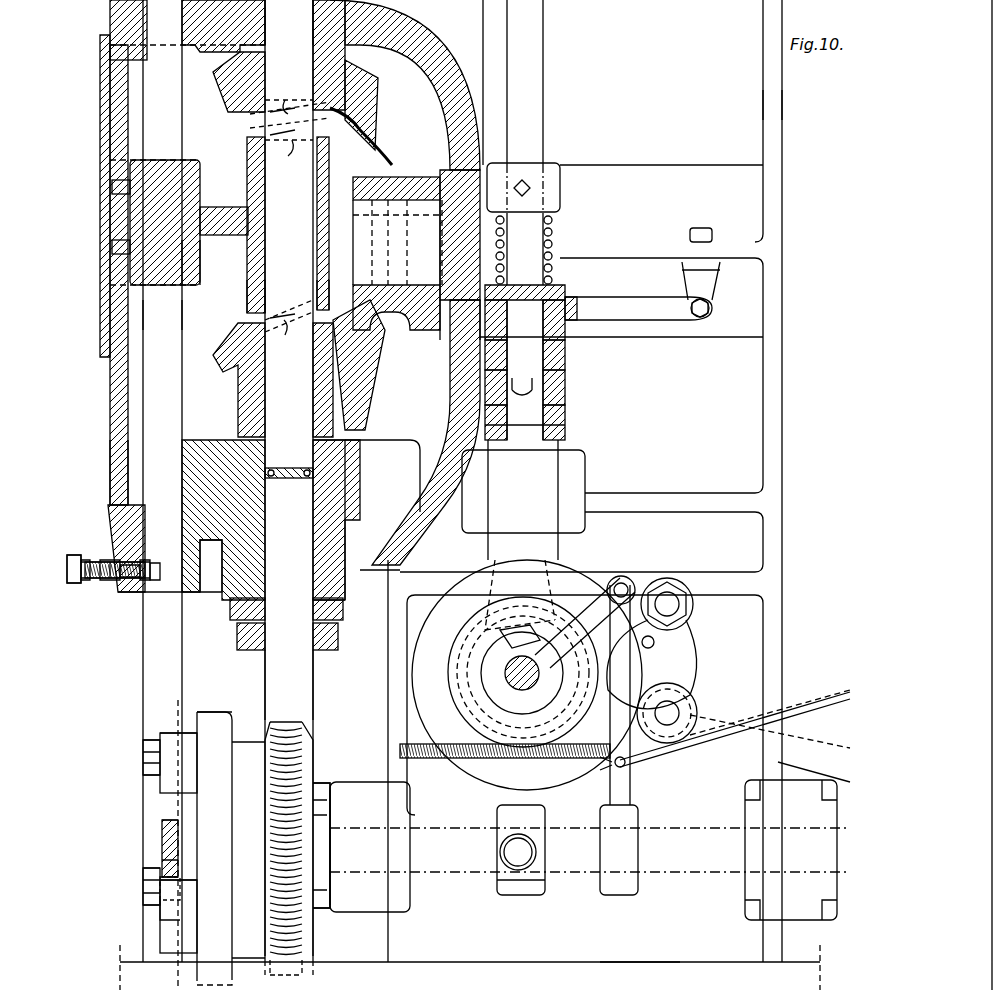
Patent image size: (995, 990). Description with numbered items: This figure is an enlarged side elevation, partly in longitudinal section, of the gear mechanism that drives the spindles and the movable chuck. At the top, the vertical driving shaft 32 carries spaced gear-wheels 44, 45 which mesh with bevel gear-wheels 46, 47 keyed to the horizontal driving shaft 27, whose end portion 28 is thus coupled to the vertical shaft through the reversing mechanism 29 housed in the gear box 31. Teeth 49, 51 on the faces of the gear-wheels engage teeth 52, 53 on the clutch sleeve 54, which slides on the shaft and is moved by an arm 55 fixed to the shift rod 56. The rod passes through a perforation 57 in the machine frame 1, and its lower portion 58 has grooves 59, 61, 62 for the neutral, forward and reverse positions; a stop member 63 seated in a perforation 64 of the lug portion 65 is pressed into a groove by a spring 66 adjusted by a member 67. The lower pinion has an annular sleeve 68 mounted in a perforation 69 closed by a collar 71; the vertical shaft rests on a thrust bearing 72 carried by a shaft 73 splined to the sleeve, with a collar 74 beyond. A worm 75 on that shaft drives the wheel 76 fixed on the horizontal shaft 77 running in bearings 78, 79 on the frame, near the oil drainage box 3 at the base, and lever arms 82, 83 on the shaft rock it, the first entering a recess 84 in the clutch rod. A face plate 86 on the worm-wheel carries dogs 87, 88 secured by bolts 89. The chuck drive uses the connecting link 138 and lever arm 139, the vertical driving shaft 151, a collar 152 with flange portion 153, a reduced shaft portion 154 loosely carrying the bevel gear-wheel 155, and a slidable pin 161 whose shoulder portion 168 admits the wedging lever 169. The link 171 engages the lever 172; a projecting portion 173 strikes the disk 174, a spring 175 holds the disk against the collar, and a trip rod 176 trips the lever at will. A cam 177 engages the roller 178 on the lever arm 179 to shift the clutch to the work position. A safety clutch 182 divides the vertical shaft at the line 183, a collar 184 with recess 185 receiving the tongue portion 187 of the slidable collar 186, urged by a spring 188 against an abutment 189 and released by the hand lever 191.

The machine frame 1 is at (755, 105).
The oil drainage box 3 is at (640, 952).
The horizontally extending driving shaft 27 is at (446, 326).
The remaining end portion 28 is at (396, 242).
The reversing mechanism 29 is at (204, 262).
The gear box 31 is at (455, 42).
The vertical driving shaft 32 is at (289, 22).
The gear-wheel 44 is at (222, 368).
The gear-wheel 45 is at (218, 80).
The bevel gear-wheel 46 is at (395, 364).
The bevel gear-wheel 47 is at (370, 92).
The teeth 49 is at (285, 337).
The teeth 51 is at (285, 97).
The teeth 52 is at (300, 320).
The teeth 53 is at (285, 152).
The clutch sleeve 54 is at (250, 286).
The arm 55 is at (228, 210).
The shift rod 56 is at (180, 313).
The perforation 57 is at (143, 452).
The portion of the shift rod 58 is at (235, 603).
The groove 59 is at (210, 590).
The groove 61 is at (150, 563).
The groove 62 is at (152, 582).
The stop member 63 is at (127, 580).
The perforation 64 is at (110, 560).
The projecting lug portion 65 is at (95, 584).
The spring 66 is at (115, 582).
The member 67 is at (85, 558).
The annular sleeve 68 is at (330, 530).
The perforation 69 is at (346, 555).
The collar 71 is at (345, 623).
The thrust bearing 72 is at (290, 482).
The shaft 73 is at (300, 670).
The collar 74 is at (243, 652).
The worm 75 is at (322, 783).
The wheel 76 is at (283, 724).
The horizontally-extending shaft 77 is at (450, 852).
The bearing 78 is at (358, 913).
The bearing 79 is at (755, 895).
The lever arm 82 is at (182, 878).
The lever arm 83 is at (160, 852).
The recess 84 is at (160, 826).
The face plate 86 is at (210, 712).
The dog 87 is at (160, 908).
The dog 88 is at (158, 735).
The bolts 89 is at (143, 770).
The connecting link 138 is at (810, 748).
The lever arm 139 is at (678, 684).
The vertical driving shaft 151 is at (540, 108).
The collar 152 is at (452, 640).
The flange portion 153 is at (458, 662).
The portion of the shaft 154 is at (522, 690).
The bevel gear-wheel 155 is at (445, 612).
The slidable pin 161 is at (522, 673).
The shoulder portion 168 is at (505, 620).
The wedging lever 169 is at (605, 572).
The link 171 is at (655, 580).
The lever 172 is at (640, 853).
The projecting portion 173 is at (560, 607).
The disk 174 is at (660, 642).
The spring 175 is at (603, 770).
The trip rod 176 is at (797, 708).
The cam 177 is at (400, 745).
The roller 178 is at (537, 856).
The lever arm 179 is at (515, 895).
The safety clutch 182 is at (562, 376).
The line 183 is at (562, 422).
The collar 184 is at (562, 394).
The recess 185 is at (512, 385).
The slidably mounted collar 186 is at (562, 352).
The tongue portion 187 is at (572, 330).
The spring 188 is at (554, 232).
The abutment 189 is at (560, 187).
The hand lever 191 is at (645, 312).